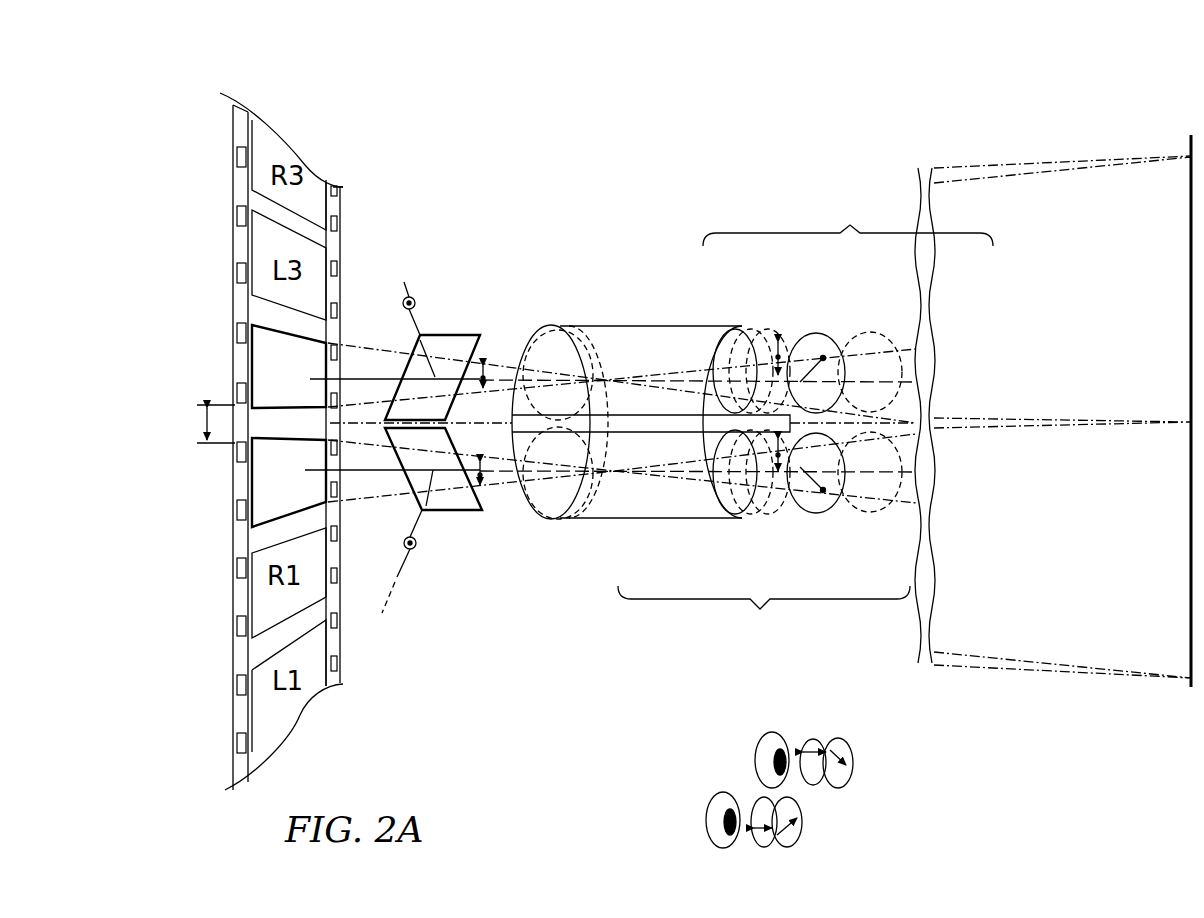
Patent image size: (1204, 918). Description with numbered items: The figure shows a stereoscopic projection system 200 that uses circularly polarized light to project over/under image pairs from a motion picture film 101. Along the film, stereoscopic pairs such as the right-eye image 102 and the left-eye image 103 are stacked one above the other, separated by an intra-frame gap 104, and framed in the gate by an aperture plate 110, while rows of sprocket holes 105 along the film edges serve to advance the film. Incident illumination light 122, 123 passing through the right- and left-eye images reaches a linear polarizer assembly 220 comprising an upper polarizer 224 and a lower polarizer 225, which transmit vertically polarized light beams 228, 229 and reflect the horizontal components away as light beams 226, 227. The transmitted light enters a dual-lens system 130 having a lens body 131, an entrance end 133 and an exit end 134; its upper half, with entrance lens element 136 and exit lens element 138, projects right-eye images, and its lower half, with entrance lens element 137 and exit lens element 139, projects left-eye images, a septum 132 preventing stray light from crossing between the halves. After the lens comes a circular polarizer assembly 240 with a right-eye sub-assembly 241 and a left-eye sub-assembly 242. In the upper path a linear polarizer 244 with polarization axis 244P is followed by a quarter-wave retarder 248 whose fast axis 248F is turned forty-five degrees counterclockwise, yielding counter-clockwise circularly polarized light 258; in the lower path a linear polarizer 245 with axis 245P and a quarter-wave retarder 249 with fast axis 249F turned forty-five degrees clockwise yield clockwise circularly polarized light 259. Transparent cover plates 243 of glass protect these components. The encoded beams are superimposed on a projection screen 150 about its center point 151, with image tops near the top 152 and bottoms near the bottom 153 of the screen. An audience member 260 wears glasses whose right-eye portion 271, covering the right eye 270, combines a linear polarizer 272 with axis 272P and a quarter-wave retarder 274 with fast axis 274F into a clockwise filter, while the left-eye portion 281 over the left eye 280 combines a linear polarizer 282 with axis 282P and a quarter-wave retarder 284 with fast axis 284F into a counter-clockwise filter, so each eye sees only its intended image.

The motion picture film 101 is at (233, 550).
The right-eye image 102 is at (253, 365).
The left-eye image 103 is at (253, 490).
The intra-frame gap 104 is at (205, 427).
The sprocket holes 105 is at (237, 263).
The aperture plate 110 is at (235, 310).
The incident illumination light 122 is at (365, 380).
The incident illumination light 123 is at (365, 472).
The dual-lens system 130 is at (643, 371).
The lens body 131 is at (630, 326).
The septum 132 is at (637, 412).
The entrance end 133 is at (538, 335).
The exit end 134 is at (708, 360).
The entrance lens element 136 is at (562, 330).
The entrance lens element 137 is at (557, 518).
The exit lens element 138 is at (733, 330).
The exit lens element 139 is at (720, 493).
The projection screen 150 is at (1191, 284).
The center point 151 is at (1191, 418).
The top of the screen 152 is at (1191, 157).
The bottom of the screen 153 is at (1191, 669).
The projection system 200 is at (535, 650).
The linear polarizer assembly 220 is at (393, 692).
The upper polarizer 224 is at (447, 335).
The lower polarizer 225 is at (452, 512).
The reflected light beam 226 is at (404, 282).
The reflected light beam 227 is at (397, 578).
The light beam 228 is at (486, 362).
The light beam 229 is at (450, 473).
The circular polarizer assembly 240 is at (805, 380).
The right-eye circular polarizer sub-assembly 241 is at (848, 220).
The left-eye circular polarizer sub-assembly 242 is at (764, 614).
The transparent cover plate 243 is at (765, 330).
The linear polarizer 244 is at (790, 335).
The polarization axis 244P is at (779, 340).
The linear polarizer 245 is at (757, 515).
The polarization axis 245P is at (778, 483).
The quarter-wave retarder 248 is at (823, 333).
The fast axis 248F is at (828, 350).
The quarter-wave retarder 249 is at (823, 513).
The fast axis 249F is at (823, 493).
The counter-clockwise circularly polarized light 258 is at (902, 382).
The clockwise circularly polarized light 259 is at (912, 475).
The audience member 260 is at (818, 798).
The right eye 270 is at (705, 838).
The right-eye portion 271 is at (864, 870).
The linear polarizer 272 is at (757, 845).
The axis of polarization 272P is at (768, 833).
The quarter-wave retarder 274 is at (787, 845).
The fast axis orientation 274F is at (803, 817).
The left eye 280 is at (757, 745).
The left-eye portion 281 is at (908, 782).
The linear polarizer 282 is at (805, 742).
The axis of polarization 282P is at (817, 747).
The quarter-wave retarder 284 is at (840, 740).
The fast axis 284F is at (851, 760).